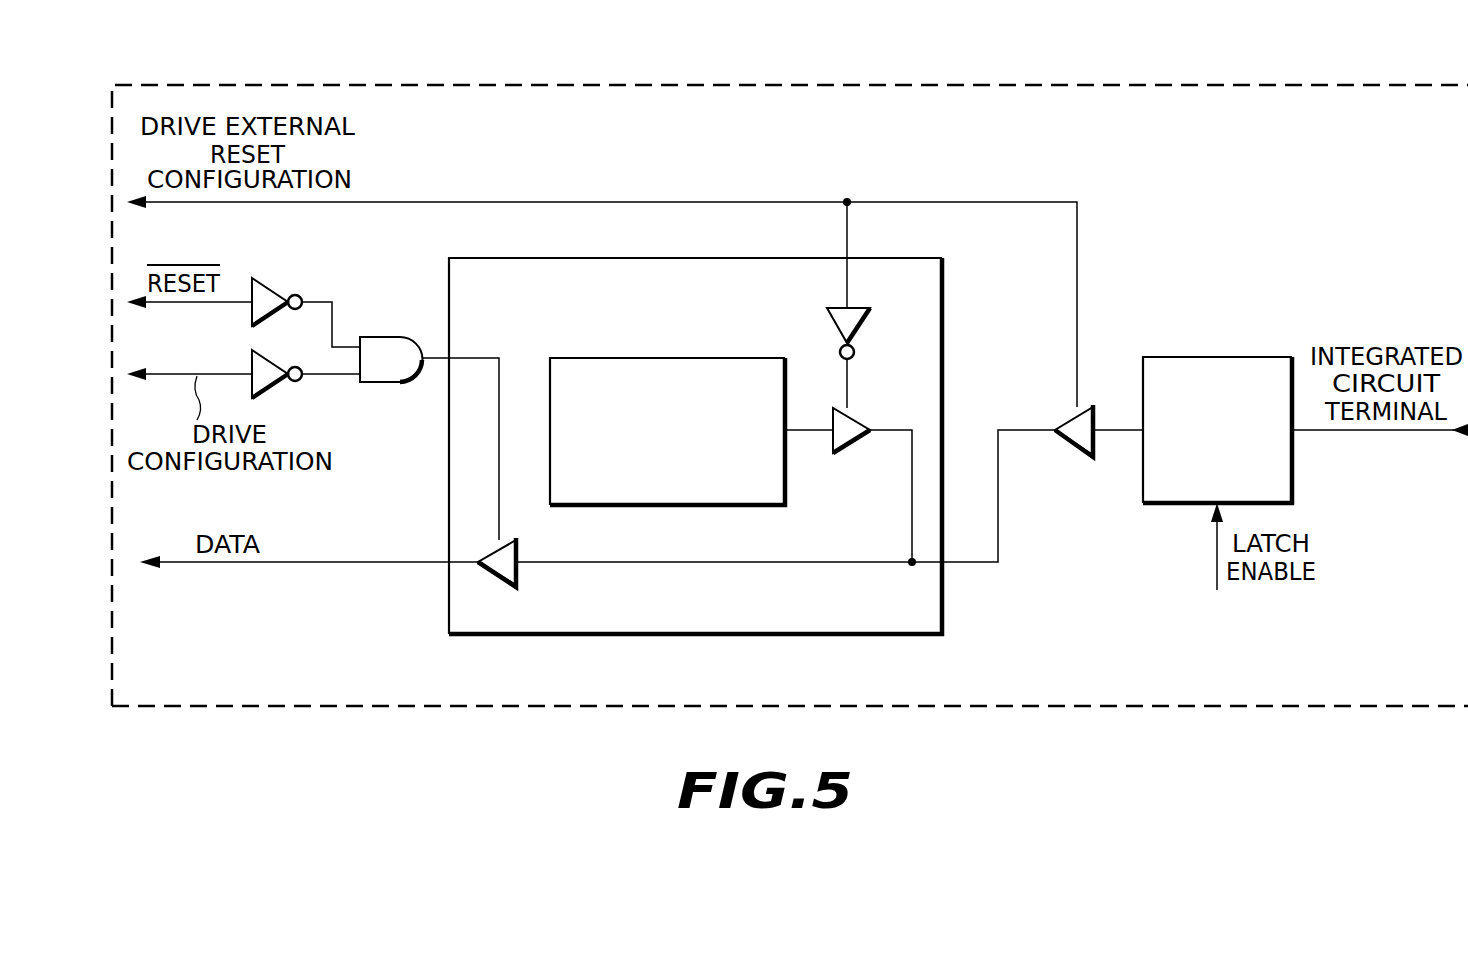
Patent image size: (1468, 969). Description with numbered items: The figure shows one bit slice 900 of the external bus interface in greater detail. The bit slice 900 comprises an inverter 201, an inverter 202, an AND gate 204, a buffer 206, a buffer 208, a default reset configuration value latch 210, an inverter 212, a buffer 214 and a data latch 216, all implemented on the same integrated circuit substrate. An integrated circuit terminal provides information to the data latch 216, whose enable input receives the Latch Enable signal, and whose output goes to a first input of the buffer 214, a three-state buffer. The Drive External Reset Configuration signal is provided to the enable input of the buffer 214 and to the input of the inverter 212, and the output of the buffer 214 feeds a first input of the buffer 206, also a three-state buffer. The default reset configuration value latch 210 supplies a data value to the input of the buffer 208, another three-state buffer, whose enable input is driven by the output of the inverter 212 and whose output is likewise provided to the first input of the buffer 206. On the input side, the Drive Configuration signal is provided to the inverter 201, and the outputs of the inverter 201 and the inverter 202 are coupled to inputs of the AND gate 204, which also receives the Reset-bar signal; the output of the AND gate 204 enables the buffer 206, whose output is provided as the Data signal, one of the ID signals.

The bit slice 900 is at (266, 42).
The inverter 201 is at (286, 388).
The inverter 202 is at (282, 284).
The AND gate 204 is at (406, 384).
The buffer 206 is at (489, 578).
The buffer 208 is at (852, 452).
The default reset configuration value latch 210 is at (604, 358).
The inverter 212 is at (864, 325).
The buffer 214 is at (1072, 452).
The data latch 216 is at (1197, 357).